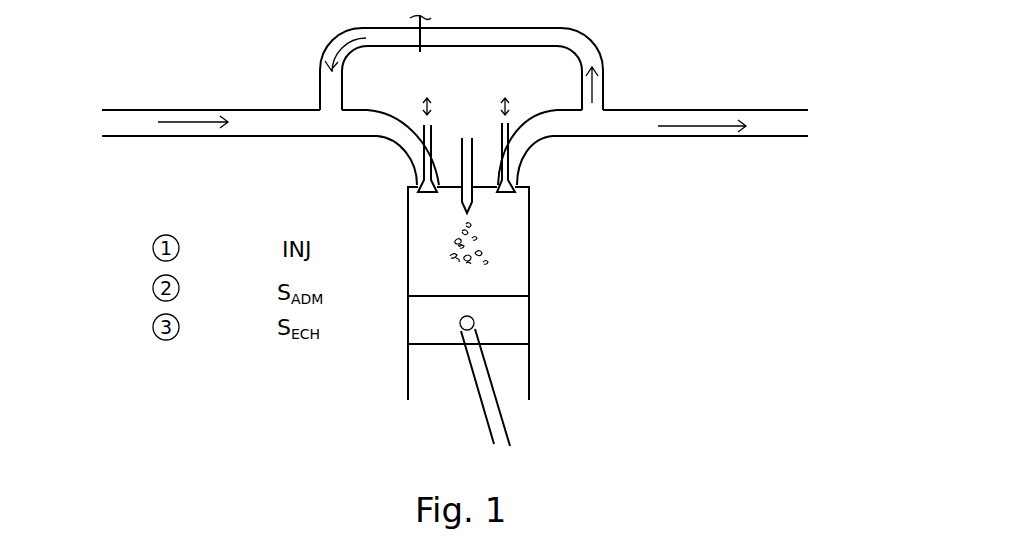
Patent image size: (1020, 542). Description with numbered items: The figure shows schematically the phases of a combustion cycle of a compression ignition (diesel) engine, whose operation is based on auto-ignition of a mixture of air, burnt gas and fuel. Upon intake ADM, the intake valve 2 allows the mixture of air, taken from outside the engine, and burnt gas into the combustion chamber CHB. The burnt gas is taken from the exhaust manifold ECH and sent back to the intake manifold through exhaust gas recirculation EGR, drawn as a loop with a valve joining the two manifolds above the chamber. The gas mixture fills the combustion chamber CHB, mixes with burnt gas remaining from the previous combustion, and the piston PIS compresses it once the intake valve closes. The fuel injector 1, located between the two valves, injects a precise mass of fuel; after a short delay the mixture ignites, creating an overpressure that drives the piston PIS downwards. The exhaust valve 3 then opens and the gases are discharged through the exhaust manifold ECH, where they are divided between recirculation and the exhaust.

The fuel injector 1 is at (464, 156).
The intake valve 2 is at (427, 129).
The exhaust valve 3 is at (504, 129).
The intake ADM is at (270, 147).
The exhaust manifold ECH is at (653, 147).
The exhaust gas recirculation EGR is at (521, 62).
The combustion chamber CHB is at (513, 239).
The piston PIS is at (505, 323).